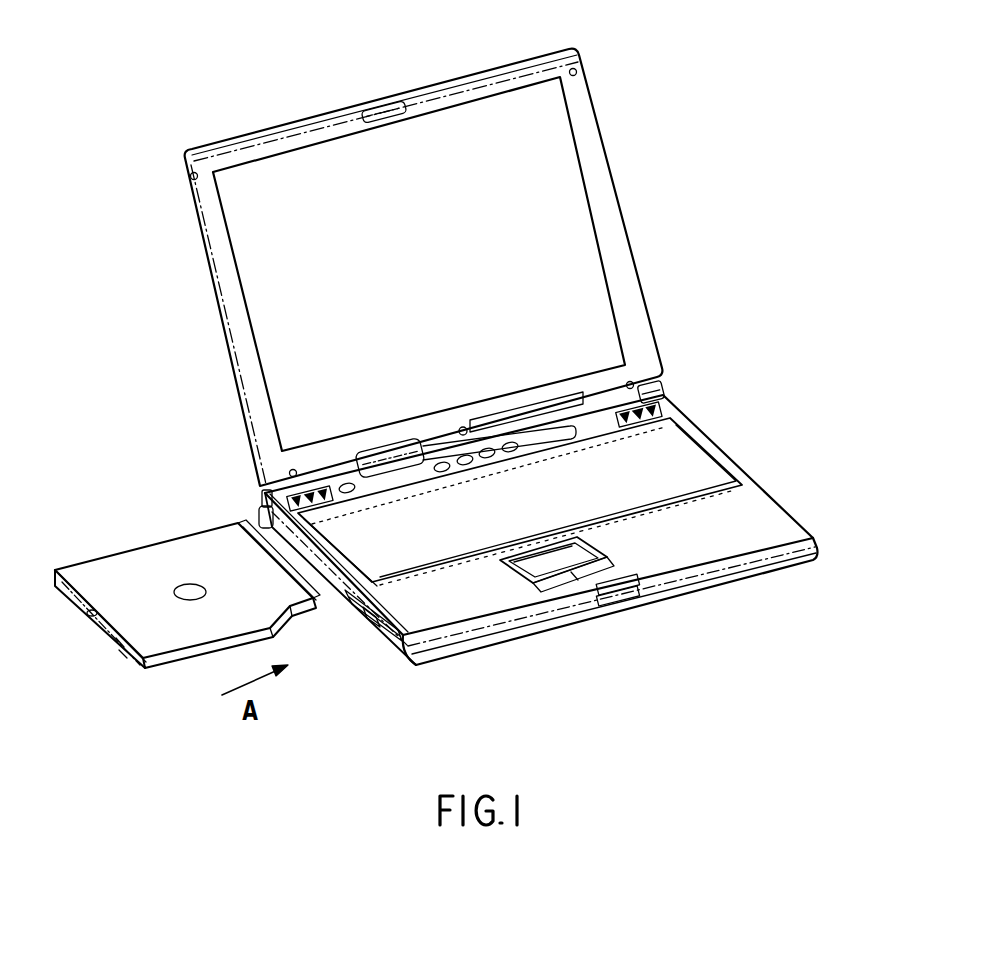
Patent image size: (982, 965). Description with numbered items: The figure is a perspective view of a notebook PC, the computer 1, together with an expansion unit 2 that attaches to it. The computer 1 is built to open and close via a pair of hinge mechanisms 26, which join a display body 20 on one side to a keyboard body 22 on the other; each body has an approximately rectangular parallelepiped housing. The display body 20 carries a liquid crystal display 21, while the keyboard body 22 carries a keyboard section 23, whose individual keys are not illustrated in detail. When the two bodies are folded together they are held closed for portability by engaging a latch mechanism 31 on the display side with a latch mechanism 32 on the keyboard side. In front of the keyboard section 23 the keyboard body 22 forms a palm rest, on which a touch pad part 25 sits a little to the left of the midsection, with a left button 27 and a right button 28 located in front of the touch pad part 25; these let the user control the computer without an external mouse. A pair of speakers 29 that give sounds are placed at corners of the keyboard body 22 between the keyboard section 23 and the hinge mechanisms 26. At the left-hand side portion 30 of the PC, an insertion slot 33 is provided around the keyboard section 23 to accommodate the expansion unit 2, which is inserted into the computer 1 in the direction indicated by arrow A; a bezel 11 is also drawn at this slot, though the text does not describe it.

The computer 1 is at (717, 70).
The expansion unit 2 is at (175, 637).
The bezel of cartridge bay 11 is at (349, 627).
The display body 20 is at (575, 240).
The liquid crystal display 21 is at (248, 240).
The keyboard body 22 is at (765, 513).
The keyboard section 23 is at (678, 450).
The touch pad part 25 is at (552, 567).
The hinge mechanisms 26 is at (264, 498).
The left button 27 is at (567, 588).
The right button 28 is at (632, 578).
The speakers 29 is at (660, 402).
The left-hand side portion 30 is at (400, 647).
The latch mechanism 31 is at (385, 102).
The latch mechanism 32 is at (615, 602).
The insertion slot 33 is at (345, 582).